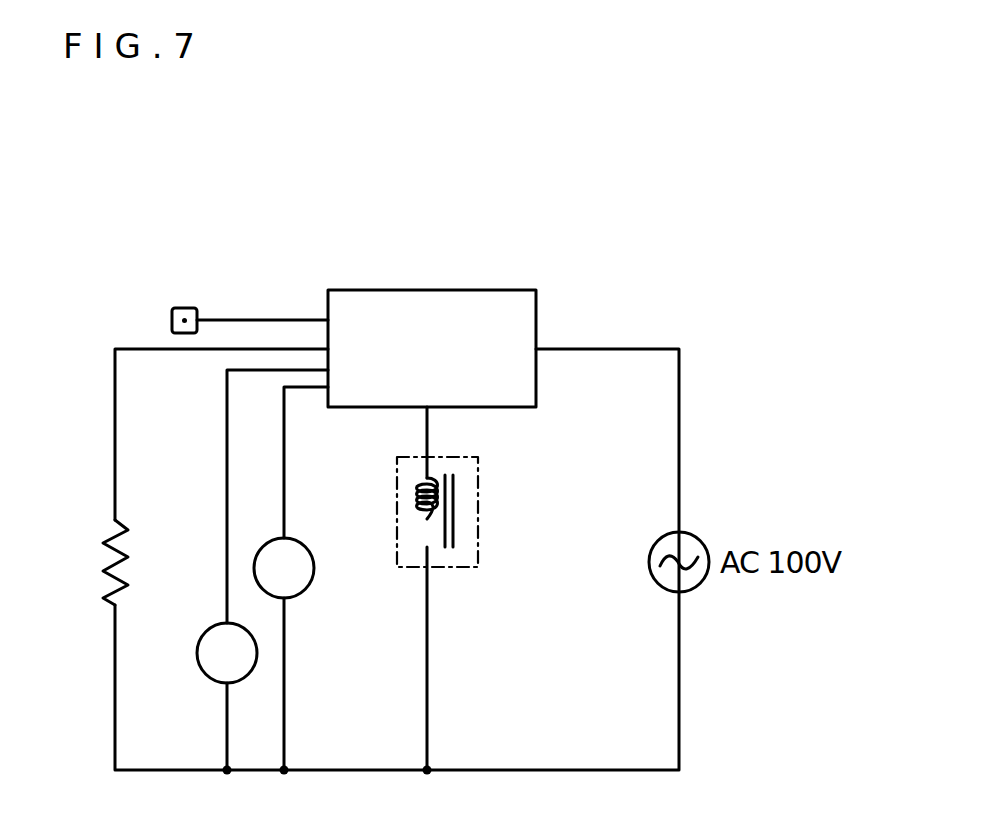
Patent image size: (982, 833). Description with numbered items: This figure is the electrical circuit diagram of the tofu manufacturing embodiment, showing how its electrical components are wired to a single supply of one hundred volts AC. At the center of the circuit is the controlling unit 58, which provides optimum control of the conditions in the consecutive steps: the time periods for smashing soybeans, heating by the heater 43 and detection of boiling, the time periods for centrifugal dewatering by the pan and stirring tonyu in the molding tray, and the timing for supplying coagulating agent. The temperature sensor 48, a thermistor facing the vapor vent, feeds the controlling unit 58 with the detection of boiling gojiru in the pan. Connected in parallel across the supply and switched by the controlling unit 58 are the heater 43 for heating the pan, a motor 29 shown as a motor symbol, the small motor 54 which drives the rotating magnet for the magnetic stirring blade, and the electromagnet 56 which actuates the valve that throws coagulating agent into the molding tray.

The controlling unit 58 is at (476, 290).
The temperature sensor 48 is at (192, 308).
The heater 43 is at (104, 542).
The motor 29 is at (206, 678).
The small motor 54 is at (300, 542).
The electromagnet 56 is at (478, 522).